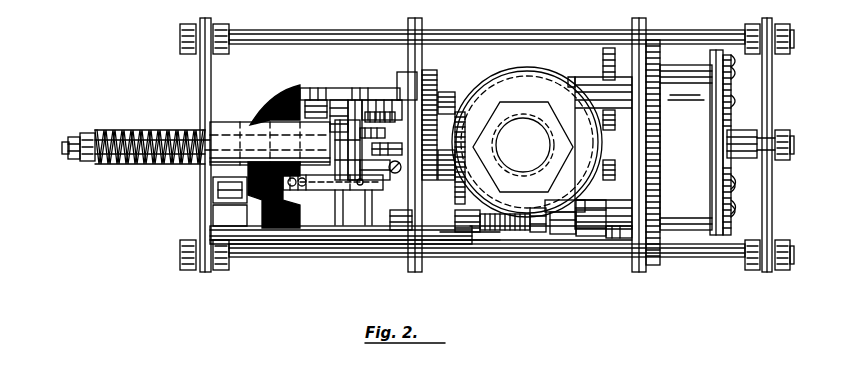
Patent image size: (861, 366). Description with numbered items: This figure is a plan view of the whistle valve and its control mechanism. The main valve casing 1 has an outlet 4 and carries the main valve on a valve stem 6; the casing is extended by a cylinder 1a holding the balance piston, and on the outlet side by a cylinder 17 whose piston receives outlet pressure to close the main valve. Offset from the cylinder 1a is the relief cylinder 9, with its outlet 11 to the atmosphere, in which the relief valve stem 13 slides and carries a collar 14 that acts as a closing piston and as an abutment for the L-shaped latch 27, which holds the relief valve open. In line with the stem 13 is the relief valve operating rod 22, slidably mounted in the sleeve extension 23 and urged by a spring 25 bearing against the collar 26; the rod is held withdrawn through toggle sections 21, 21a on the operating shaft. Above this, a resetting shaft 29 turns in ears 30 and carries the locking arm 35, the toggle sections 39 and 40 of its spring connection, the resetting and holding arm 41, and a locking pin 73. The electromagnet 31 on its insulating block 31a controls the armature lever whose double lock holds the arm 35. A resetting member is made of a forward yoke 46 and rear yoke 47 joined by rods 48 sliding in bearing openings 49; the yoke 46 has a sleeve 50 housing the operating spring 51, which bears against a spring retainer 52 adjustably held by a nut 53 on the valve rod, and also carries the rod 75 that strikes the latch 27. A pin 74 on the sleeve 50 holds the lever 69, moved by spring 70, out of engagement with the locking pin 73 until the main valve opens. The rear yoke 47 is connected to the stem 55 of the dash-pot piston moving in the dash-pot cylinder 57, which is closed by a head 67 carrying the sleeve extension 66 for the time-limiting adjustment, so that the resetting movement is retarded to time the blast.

The casing 1 is at (545, 78).
The extension forming a cylinder 1a is at (593, 77).
The outlet 4 is at (511, 132).
The valve stem 6 is at (68, 148).
The relief cylinder 9 is at (593, 236).
The outlet from the relief cylinder 11 is at (614, 240).
The valve stem 13 is at (558, 234).
The collar 14 is at (565, 223).
The extension forming a cylinder 17 is at (449, 106).
The toggle lever section 21 is at (287, 217).
The toggle lever section 21a is at (277, 226).
The relief valve operating rod 22 is at (510, 231).
The sleeve extension 23 is at (452, 222).
The spring 25 is at (498, 220).
The collar 26 is at (522, 232).
The L-shaped locking lever or latch 27 is at (472, 237).
The resetting shaft 29 is at (363, 231).
The ears 30 is at (383, 88).
The electromagnet 31 is at (301, 95).
The insulating block 31a is at (276, 86).
The locking arm 35 is at (327, 192).
The toggle section 39 is at (386, 133).
The toggle section 40 is at (397, 118).
The resetting and holding arm 41 is at (403, 149).
The forward yoke 46 is at (203, 80).
The rear yoke 47 is at (770, 100).
The rods 48 is at (700, 29).
The bearing openings 49 is at (422, 32).
The sleeve extension 50 is at (233, 125).
The operating spring 51 is at (150, 131).
The spring retainer 52 is at (91, 133).
The nut 53 is at (86, 135).
The stem 55 is at (738, 130).
The dash-pot cylinder 57 is at (697, 142).
The sleeve extension 66 is at (732, 181).
The head 67 is at (732, 206).
The lever 69 is at (312, 96).
The spring 70 is at (392, 96).
The locking pin 73 is at (350, 100).
The pin 74 is at (330, 99).
The rod 75 is at (223, 223).